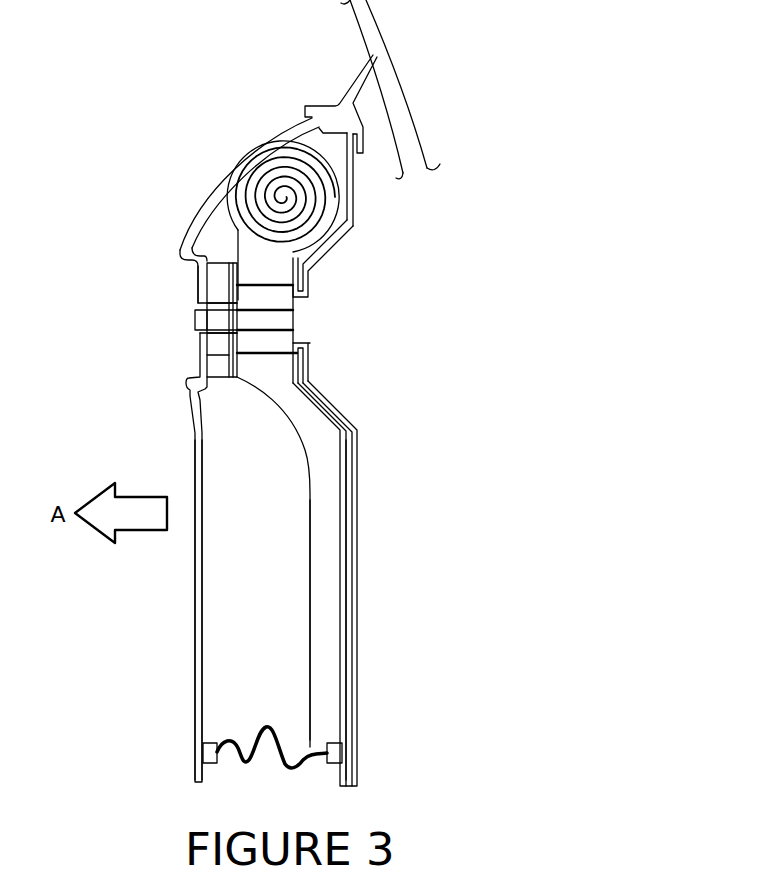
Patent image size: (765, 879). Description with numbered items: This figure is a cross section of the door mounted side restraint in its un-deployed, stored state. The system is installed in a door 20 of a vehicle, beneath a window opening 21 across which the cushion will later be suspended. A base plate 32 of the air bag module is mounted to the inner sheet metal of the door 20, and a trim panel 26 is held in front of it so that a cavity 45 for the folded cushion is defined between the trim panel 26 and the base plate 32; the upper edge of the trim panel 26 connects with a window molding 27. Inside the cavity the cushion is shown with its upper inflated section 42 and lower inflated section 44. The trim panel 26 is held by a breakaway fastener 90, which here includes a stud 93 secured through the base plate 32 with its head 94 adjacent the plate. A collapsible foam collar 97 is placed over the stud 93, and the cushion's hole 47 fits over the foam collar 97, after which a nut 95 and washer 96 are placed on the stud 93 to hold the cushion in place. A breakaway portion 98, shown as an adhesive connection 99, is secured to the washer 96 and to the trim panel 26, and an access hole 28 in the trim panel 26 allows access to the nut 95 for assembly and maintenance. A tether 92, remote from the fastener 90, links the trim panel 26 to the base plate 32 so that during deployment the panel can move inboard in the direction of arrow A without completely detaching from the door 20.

The door 20 is at (357, 195).
The window opening 21 is at (358, 18).
The trim panel 26 is at (193, 705).
The window molding 27 is at (363, 88).
The access hole 28 is at (203, 302).
The base plate 32 is at (342, 538).
The upper inflated section 42 is at (220, 192).
The lower inflated section 44 is at (325, 462).
The cavity 45 is at (203, 238).
The hole 47 is at (306, 275).
The breakaway fastener 90 is at (183, 322).
The tether 92 is at (257, 761).
The stud 93 is at (283, 320).
The head 94 is at (300, 313).
The nut 95 is at (203, 333).
The washer 96 is at (227, 403).
The collapsible foam collar 97 is at (272, 340).
The breakaway portion 98 is at (223, 285).
The adhesive connection 99 is at (217, 355).